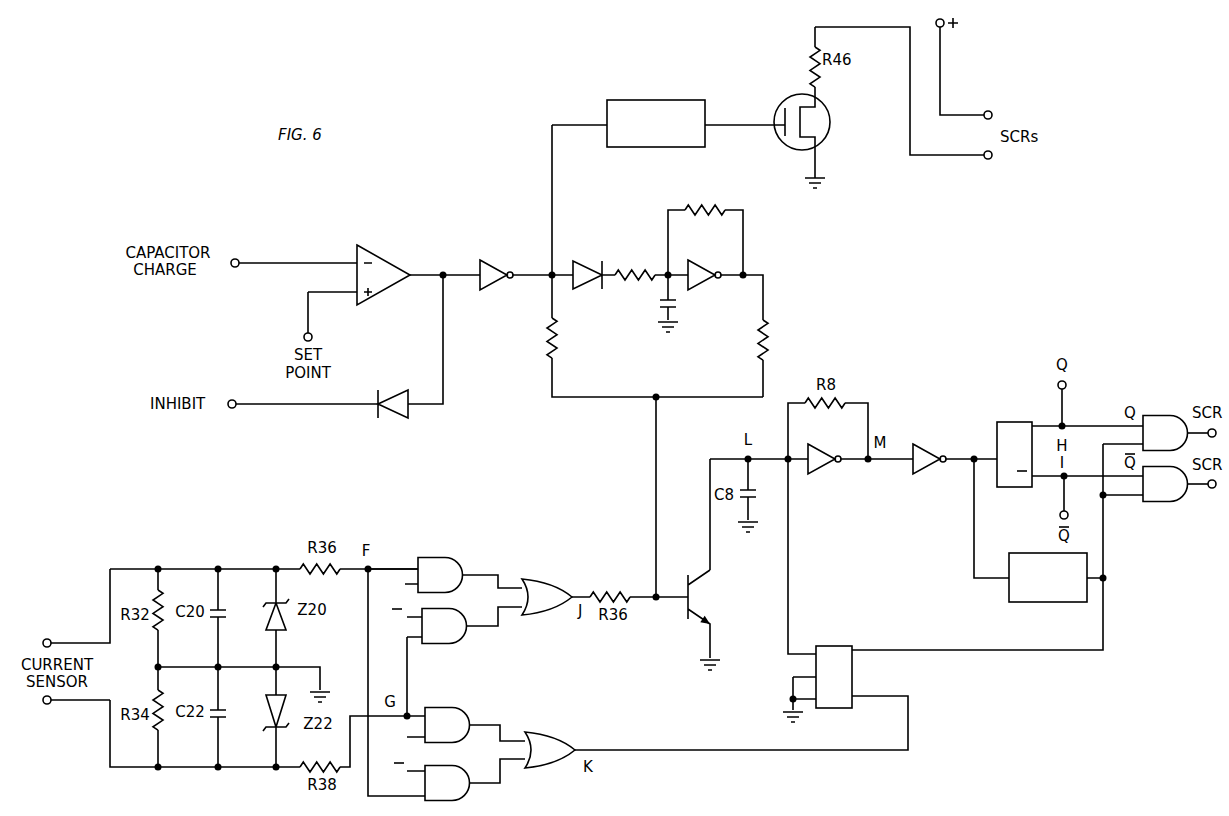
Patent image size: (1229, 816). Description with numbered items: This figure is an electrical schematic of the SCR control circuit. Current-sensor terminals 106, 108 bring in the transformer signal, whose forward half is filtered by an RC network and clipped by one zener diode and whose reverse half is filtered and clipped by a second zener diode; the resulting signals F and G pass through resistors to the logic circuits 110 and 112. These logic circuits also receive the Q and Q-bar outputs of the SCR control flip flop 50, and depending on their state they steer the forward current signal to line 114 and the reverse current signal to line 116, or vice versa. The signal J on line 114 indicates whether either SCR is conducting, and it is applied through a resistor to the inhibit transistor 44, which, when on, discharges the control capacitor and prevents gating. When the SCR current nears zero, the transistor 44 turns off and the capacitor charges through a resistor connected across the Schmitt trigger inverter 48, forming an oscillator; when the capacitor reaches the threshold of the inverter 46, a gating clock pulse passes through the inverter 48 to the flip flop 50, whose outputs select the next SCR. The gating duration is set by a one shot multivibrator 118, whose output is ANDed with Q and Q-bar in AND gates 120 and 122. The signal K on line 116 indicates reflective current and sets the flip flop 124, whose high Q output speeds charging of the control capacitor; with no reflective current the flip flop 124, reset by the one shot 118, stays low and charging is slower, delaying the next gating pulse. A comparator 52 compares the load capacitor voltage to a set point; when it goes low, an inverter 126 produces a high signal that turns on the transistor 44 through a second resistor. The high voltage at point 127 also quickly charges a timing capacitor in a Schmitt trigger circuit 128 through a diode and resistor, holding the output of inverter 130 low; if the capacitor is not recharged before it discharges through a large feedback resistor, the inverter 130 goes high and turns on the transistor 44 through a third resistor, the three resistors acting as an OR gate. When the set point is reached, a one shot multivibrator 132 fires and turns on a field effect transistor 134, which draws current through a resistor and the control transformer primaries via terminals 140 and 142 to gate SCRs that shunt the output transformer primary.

The comparator 52 is at (378, 258).
The inverter 126 is at (498, 264).
The point 127 is at (555, 271).
The Schmitt trigger circuit 128 is at (763, 257).
The inverter 130 is at (701, 262).
The one shot multivibrator 132 is at (680, 100).
The field effect transistor 134 is at (819, 138).
The terminal 142 is at (991, 112).
The terminal 140 is at (991, 159).
The inverter 46 is at (822, 473).
The Schmitt trigger inverter 48 is at (930, 447).
The flip flop 50 is at (1012, 422).
The AND gate 120 is at (1157, 416).
The AND gate 122 is at (1161, 502).
The one shot multivibrator 118 is at (1030, 602).
The flip flop 124 is at (852, 646).
The inhibit transistor 44 is at (686, 606).
The line 114 is at (578, 590).
The line 116 is at (587, 748).
The logic circuit 110 is at (468, 547).
The logic circuit 112 is at (470, 701).
The terminal 106 is at (50, 639).
The terminal 108 is at (49, 704).